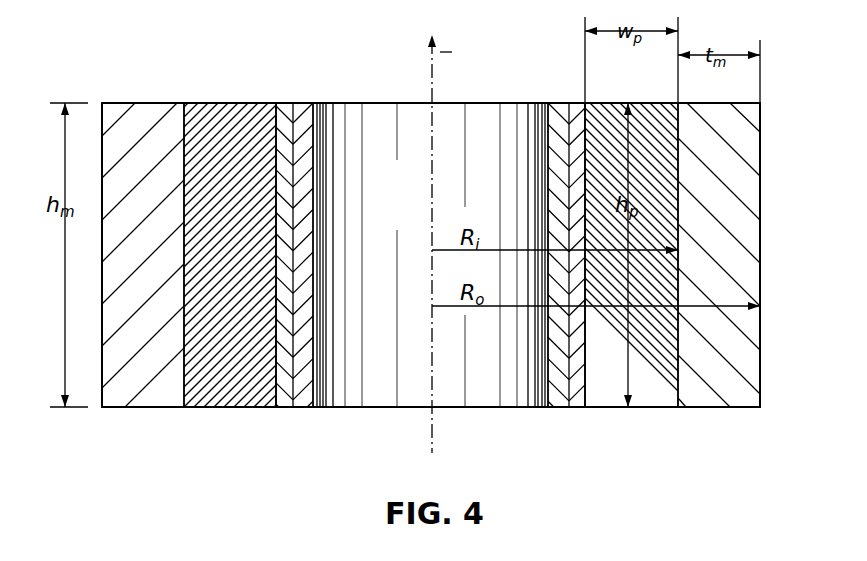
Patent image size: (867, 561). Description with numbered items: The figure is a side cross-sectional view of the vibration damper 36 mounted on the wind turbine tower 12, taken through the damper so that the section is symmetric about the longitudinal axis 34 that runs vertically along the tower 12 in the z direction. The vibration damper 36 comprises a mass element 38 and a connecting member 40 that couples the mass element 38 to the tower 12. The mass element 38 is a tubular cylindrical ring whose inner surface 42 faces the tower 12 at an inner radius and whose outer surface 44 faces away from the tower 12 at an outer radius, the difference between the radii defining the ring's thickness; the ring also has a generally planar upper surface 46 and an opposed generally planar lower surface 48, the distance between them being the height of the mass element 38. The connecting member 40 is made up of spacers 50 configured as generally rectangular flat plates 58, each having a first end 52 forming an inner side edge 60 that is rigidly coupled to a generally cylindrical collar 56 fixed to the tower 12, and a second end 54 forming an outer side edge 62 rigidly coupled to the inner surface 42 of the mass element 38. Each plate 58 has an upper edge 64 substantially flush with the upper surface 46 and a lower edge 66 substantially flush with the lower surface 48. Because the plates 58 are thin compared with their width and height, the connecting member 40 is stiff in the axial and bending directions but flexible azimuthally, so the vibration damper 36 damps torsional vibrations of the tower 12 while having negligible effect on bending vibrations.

The tower 12 is at (320, 127).
The longitudinal axis 34 is at (432, 445).
The vibration damper 36 is at (105, 88).
The mass element 38 is at (765, 152).
The connecting member 40 is at (600, 100).
The inner surface 42 is at (188, 165).
The outer surface 44 is at (760, 281).
The upper surface 46 is at (145, 102).
The lower surface 48 is at (748, 408).
The spacers 50 is at (398, 281).
The first end 52 is at (416, 272).
The second end 54 is at (426, 257).
The collar 56 is at (290, 395).
The flat plates 58 is at (398, 281).
The inner side edge 60 is at (416, 272).
The outer side edge 62 is at (183, 113).
The upper edge 64 is at (398, 281).
The lower edge 66 is at (233, 408).